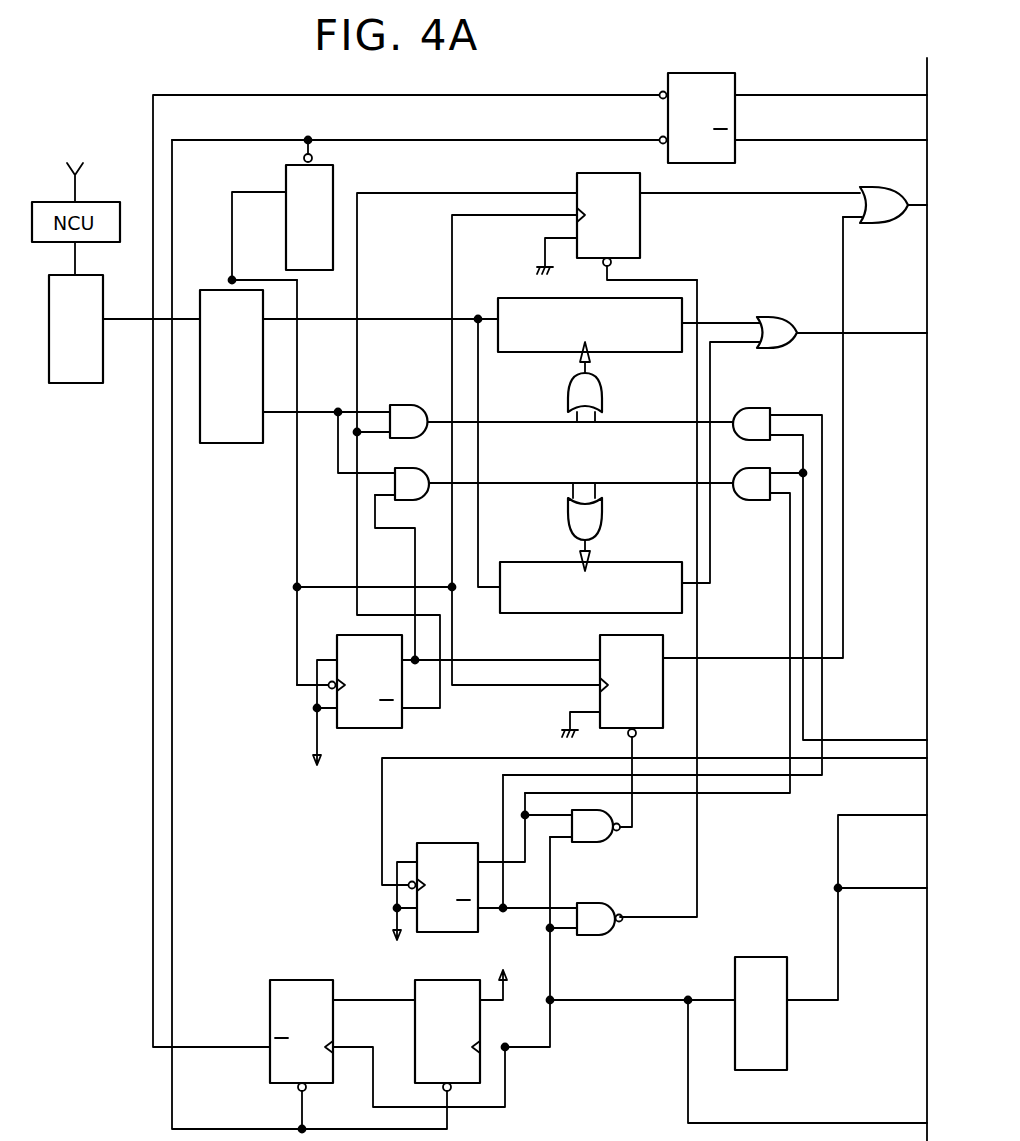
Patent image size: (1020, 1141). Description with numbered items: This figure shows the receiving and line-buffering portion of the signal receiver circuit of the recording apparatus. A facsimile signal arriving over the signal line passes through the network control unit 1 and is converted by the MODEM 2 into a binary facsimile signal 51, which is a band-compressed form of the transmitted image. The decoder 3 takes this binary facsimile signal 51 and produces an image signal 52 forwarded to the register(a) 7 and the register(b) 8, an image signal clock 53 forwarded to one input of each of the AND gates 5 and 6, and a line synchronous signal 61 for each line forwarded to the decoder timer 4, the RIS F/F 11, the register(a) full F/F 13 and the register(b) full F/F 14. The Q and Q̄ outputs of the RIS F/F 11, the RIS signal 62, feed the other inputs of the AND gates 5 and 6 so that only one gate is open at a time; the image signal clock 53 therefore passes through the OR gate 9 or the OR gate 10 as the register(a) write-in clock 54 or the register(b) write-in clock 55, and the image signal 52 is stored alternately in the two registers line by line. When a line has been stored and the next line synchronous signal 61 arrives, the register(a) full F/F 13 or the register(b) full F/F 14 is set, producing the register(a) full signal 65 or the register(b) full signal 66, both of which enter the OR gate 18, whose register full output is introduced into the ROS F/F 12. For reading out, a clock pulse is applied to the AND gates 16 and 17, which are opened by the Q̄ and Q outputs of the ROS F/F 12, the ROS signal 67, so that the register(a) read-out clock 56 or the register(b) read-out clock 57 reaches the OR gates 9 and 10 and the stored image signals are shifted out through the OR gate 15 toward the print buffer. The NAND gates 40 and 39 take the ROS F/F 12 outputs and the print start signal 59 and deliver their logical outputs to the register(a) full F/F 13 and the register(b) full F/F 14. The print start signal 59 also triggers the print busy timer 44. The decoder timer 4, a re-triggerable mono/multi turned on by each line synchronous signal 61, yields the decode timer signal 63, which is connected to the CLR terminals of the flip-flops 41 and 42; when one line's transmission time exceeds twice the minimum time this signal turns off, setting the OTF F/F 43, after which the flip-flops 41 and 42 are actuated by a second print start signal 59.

The NCU (Network Control Unit) 1 is at (106, 199).
The MODEM (Modulator/Demodulator) 2 is at (75, 383).
The decoder 3 is at (230, 443).
The decoder timer 4 is at (333, 178).
The AND gate 5 is at (409, 405).
The AND gate 6 is at (421, 500).
The register(a) 7 is at (540, 352).
The register(b) 8 is at (537, 562).
The OR gate 9 is at (603, 376).
The OR gate 10 is at (603, 518).
The RIS F/F (Register Input Selector Flip-Flop) 11 is at (356, 728).
The ROS F/F (Register Output Selector Flip-Flop) 12 is at (445, 843).
The register(a) full F/F 13 is at (640, 224).
The register(b) full F/F 14 is at (598, 640).
The OR gate 15 is at (785, 317).
The AND gate 16 is at (740, 405).
The AND gate 17 is at (740, 500).
The OR gate 18 is at (876, 223).
The NAND gate 39 is at (605, 842).
The NAND gate 40 is at (613, 935).
The F/F (Flip-Flop) 41 is at (480, 1017).
The F/F (Flip-Flop) 42 is at (298, 980).
The OTF F/F (Overtime Flag Flip-Flop) 43 is at (735, 78).
The print busy timer 44 is at (759, 957).
The binary facsimile signal 51 is at (125, 321).
The image signal 52 is at (318, 322).
The image signal clock 53 is at (313, 415).
The register(a) write-in clock 54 is at (500, 415).
The register(b) write-in clock 55 is at (495, 486).
The register(a) read-out clock 56 is at (667, 418).
The register(b) read-out clock 57 is at (667, 486).
The print start signal 59 is at (620, 1003).
The line synchronous signal 61 is at (232, 228).
The RIS signal (Register Input Selector) 62 is at (416, 556).
The decode timer signal 63 is at (432, 143).
The register(a) full signal 65 is at (780, 195).
The register(b) full signal 66 is at (741, 656).
The ROS signal (Register Output Selector) 67 is at (745, 795).